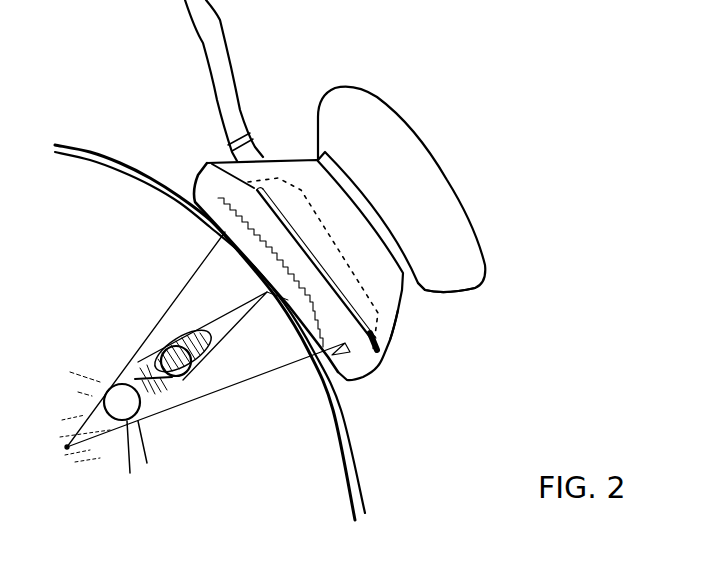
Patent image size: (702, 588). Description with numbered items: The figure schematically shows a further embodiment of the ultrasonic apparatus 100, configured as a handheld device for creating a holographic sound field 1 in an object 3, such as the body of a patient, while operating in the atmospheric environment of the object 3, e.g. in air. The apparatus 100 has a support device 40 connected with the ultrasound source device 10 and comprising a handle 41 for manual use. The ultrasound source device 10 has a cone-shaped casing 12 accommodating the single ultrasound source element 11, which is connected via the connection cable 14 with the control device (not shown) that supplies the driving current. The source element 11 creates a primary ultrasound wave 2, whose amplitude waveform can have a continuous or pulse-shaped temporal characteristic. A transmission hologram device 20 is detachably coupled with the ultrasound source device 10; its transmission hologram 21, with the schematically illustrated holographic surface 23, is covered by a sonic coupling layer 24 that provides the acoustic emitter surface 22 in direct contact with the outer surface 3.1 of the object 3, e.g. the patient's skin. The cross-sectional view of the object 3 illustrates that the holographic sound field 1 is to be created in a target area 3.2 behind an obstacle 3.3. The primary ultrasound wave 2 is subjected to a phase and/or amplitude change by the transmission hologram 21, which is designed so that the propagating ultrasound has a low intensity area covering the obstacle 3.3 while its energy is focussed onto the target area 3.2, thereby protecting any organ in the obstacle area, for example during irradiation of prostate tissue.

The holographic sound field 1 is at (97, 430).
The primary ultrasound wave 2 is at (183, 302).
The object 3 is at (333, 483).
The outer surface of the object 3.1 is at (363, 497).
The target area 3.2 is at (145, 430).
The obstacle 3.3 is at (183, 371).
The ultrasound source device 10 is at (300, 206).
The ultrasound source element 11 is at (376, 347).
The cone-shaped casing 12 is at (402, 313).
The connection cable 14 is at (217, 53).
The transmission hologram device 20 is at (234, 200).
The transmission hologram 21 is at (348, 357).
The acoustic emitter surface 22 is at (293, 325).
The holographic surface 23 is at (313, 367).
The sonic coupling layer 24 is at (212, 222).
The support device 40 is at (367, 126).
The handle 41 is at (460, 270).
The ultrasonic apparatus 100 is at (486, 146).